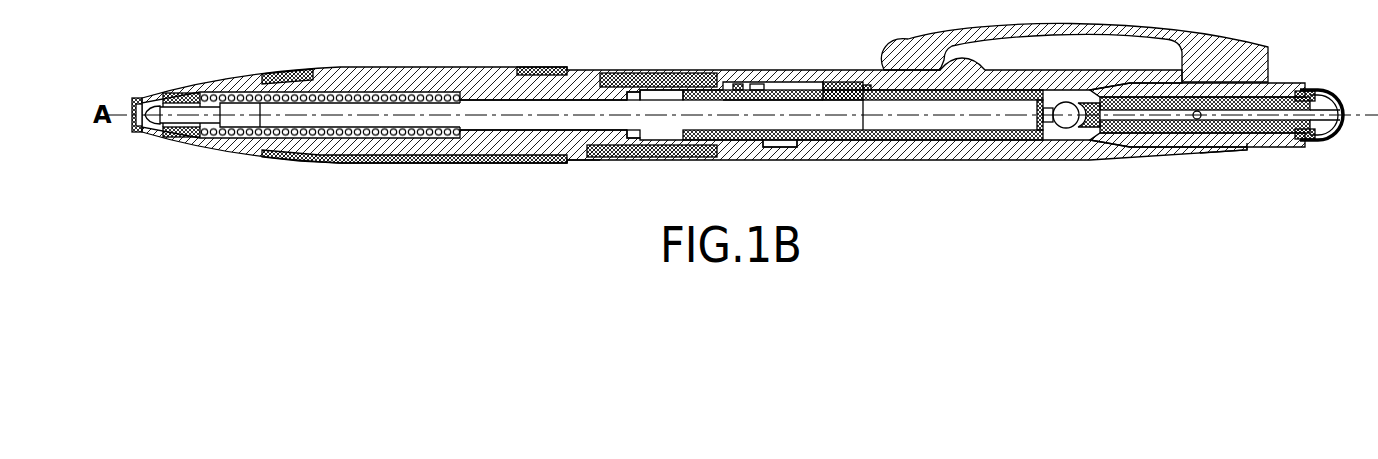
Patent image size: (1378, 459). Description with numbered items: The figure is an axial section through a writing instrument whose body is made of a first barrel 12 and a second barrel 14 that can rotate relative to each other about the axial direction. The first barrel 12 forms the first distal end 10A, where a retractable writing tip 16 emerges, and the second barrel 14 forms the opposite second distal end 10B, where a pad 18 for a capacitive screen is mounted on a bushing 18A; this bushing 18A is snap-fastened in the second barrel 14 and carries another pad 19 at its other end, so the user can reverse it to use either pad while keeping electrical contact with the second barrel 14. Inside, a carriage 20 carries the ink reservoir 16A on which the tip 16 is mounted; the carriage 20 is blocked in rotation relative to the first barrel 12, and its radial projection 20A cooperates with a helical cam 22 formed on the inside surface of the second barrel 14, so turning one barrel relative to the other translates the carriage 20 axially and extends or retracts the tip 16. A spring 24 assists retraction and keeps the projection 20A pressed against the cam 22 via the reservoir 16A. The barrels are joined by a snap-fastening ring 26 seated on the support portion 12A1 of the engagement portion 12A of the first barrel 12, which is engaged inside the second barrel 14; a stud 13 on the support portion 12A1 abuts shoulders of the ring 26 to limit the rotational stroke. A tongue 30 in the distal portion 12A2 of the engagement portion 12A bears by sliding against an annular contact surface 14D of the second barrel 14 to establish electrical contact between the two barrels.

The first distal end 10A is at (136, 130).
The second distal end 10B is at (1243, 152).
The first barrel 12 is at (448, 73).
The engagement portion 12A is at (615, 85).
The support portion 12A1 is at (670, 88).
The distal portion 12A2 is at (722, 152).
The stud 13 is at (590, 82).
The second barrel 14 is at (910, 152).
The annular contact surface 14D is at (760, 103).
The writing tip 16 is at (190, 132).
The ink reservoir 16A is at (310, 120).
The pad 18 is at (1344, 110).
The bushing 18A is at (1276, 85).
The pad 19 is at (1057, 135).
The carriage 20 is at (787, 145).
The radial projection 20A is at (840, 80).
The helical cam 22 is at (874, 70).
The spring 24 is at (336, 90).
The snap-fastening ring 26 is at (590, 155).
The tongue 30 is at (738, 82).